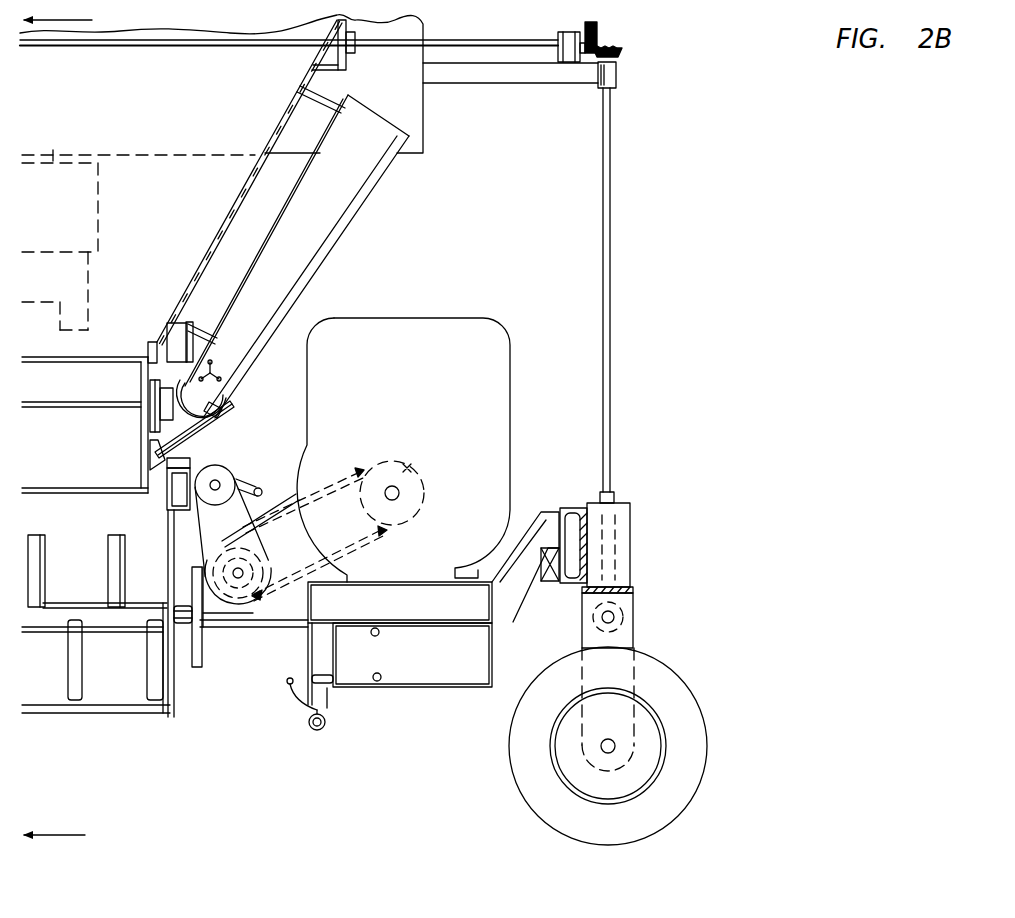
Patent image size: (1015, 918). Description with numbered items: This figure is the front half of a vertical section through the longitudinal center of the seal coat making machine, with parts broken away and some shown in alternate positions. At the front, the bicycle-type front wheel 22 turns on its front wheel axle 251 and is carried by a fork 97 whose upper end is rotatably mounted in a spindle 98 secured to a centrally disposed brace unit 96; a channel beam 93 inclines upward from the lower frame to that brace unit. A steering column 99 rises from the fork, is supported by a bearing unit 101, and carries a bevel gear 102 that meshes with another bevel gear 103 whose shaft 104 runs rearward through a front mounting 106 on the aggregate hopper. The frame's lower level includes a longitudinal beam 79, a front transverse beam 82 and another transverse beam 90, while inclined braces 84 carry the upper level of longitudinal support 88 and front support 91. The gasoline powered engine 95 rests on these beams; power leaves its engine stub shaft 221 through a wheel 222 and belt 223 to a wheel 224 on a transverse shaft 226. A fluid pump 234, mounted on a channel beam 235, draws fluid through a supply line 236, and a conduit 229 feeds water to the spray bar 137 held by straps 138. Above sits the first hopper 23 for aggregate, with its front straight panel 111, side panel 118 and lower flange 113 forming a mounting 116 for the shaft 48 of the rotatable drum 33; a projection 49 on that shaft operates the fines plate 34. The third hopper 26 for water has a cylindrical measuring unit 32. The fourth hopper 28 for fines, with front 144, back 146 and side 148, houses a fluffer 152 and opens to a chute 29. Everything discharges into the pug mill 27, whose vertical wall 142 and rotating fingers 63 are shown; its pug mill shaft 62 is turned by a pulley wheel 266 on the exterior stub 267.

The front wheel 22 is at (528, 789).
The first hopper 23 is at (200, 237).
The third hopper 26 is at (415, 107).
The pug mill 27 is at (110, 698).
The fourth hopper 28 is at (362, 240).
The chute 29 is at (200, 431).
The cylindrical measuring unit 32 is at (100, 228).
The rotatable drum 33 is at (60, 373).
The fines plate 34 is at (222, 421).
The shaft 48 is at (97, 408).
The projection 49 is at (152, 452).
The pug mill shaft 62 is at (62, 617).
The rotating fingers 63 is at (72, 662).
The beam 79 is at (255, 618).
The transverse beam 82 is at (486, 598).
The inclined braces 84 is at (190, 457).
The longitudinal support 88 is at (170, 345).
The transverse beam 90 is at (307, 606).
The front support 91 is at (187, 322).
The channel beam 93 is at (530, 540).
The gasoline powered engine 95 is at (478, 335).
The brace unit 96 is at (567, 506).
The fork 97 is at (624, 633).
The spindle 98 is at (621, 543).
The steering column 99 is at (612, 375).
The bearing unit 101 is at (617, 77).
The bevel gear 102 is at (623, 50).
The bevel gear 103 is at (598, 29).
The shaft 104 is at (540, 40).
The front mounting 106 is at (353, 52).
The front straight panel 111 is at (250, 173).
The lower flange 113 is at (148, 350).
The mounting 116 is at (160, 398).
The side panel 118 is at (180, 124).
The spray bar 137 is at (311, 733).
The straps 138 is at (313, 667).
The vertical wall 142 is at (173, 692).
The front 144 is at (385, 180).
The back 146 is at (307, 180).
The side 148 is at (352, 212).
The fluffer 152 is at (216, 370).
The engine stub shaft 221 is at (399, 490).
The wheel 222 is at (411, 464).
The belt 223 is at (380, 544).
The wheel 224 is at (303, 551).
The transverse shaft 226 is at (282, 535).
The conduit 229 is at (293, 700).
The fluid pump 234 is at (215, 476).
The channel beam 235 is at (167, 497).
The supply line 236 is at (267, 489).
The front wheel axle 251 is at (615, 746).
The pulley wheel 266 is at (202, 656).
The exterior stub 267 is at (250, 618).